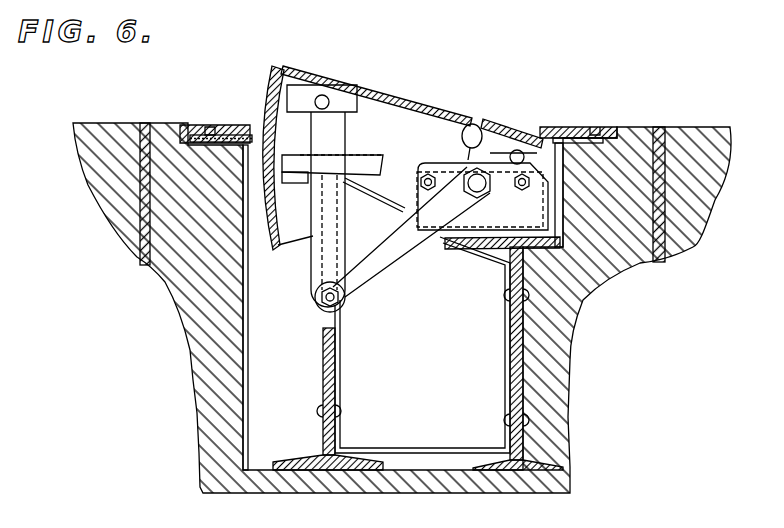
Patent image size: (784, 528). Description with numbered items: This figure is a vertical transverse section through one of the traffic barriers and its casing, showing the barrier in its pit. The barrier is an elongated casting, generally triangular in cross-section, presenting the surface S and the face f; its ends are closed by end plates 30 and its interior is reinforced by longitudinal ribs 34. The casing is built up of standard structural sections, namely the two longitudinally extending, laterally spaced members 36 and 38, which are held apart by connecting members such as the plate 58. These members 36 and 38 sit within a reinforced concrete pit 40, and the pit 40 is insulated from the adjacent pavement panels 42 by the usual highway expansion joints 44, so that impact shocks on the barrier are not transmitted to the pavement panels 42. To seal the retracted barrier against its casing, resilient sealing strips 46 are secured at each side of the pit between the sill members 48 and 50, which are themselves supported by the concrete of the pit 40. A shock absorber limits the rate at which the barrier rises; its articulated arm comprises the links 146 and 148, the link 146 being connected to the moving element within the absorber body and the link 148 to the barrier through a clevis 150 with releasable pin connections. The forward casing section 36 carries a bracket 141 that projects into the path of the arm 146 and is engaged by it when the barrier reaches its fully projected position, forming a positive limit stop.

The end plate 30 is at (284, 245).
The longitudinal rib 34 is at (482, 128).
The forward casing section 36 is at (322, 373).
The rear casing section 38 is at (528, 382).
The pit 40 is at (183, 315).
The pavement panel 42 is at (90, 135).
The expansion joint 44 is at (137, 257).
The sealing strip 46 is at (222, 145).
The sill member 48 is at (215, 135).
The sill member 50 is at (243, 200).
The plate 58 is at (422, 345).
The bracket 141 is at (290, 183).
The link 146 is at (388, 268).
The link 148 is at (348, 135).
The clevis 150 is at (348, 84).
The surface S is at (452, 120).
The face f is at (270, 96).